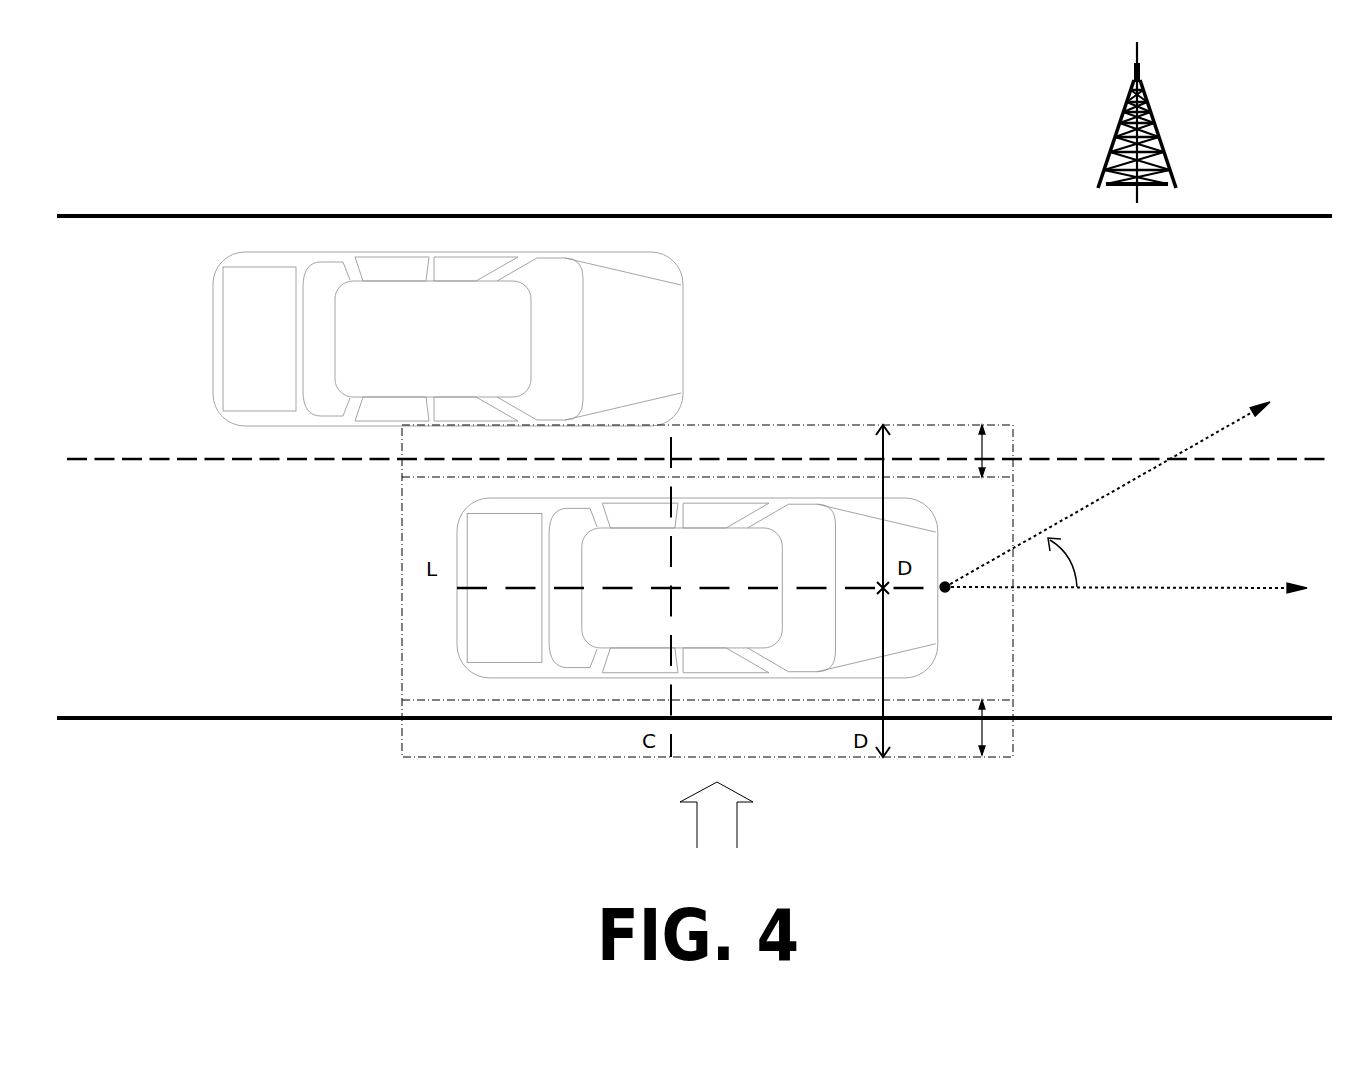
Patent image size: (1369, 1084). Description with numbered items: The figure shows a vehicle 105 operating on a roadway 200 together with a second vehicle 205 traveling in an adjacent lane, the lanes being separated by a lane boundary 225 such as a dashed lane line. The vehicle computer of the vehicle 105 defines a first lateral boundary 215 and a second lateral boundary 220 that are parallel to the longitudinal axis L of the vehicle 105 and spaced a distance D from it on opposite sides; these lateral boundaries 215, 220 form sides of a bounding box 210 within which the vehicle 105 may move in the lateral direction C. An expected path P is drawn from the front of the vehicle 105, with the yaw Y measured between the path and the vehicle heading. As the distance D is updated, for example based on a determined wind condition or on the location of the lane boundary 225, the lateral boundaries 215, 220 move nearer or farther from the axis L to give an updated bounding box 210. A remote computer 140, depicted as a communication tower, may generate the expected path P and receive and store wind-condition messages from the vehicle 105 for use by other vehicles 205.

The vehicle 105 is at (697, 588).
The remote computer 140 is at (1120, 134).
The roadway 200 is at (1248, 190).
The second vehicle 205 is at (448, 339).
The bounding box 210 is at (988, 385).
The first lateral boundary 215 is at (899, 546).
The second lateral boundary 220 is at (707, 624).
The lane boundary 225 is at (216, 459).